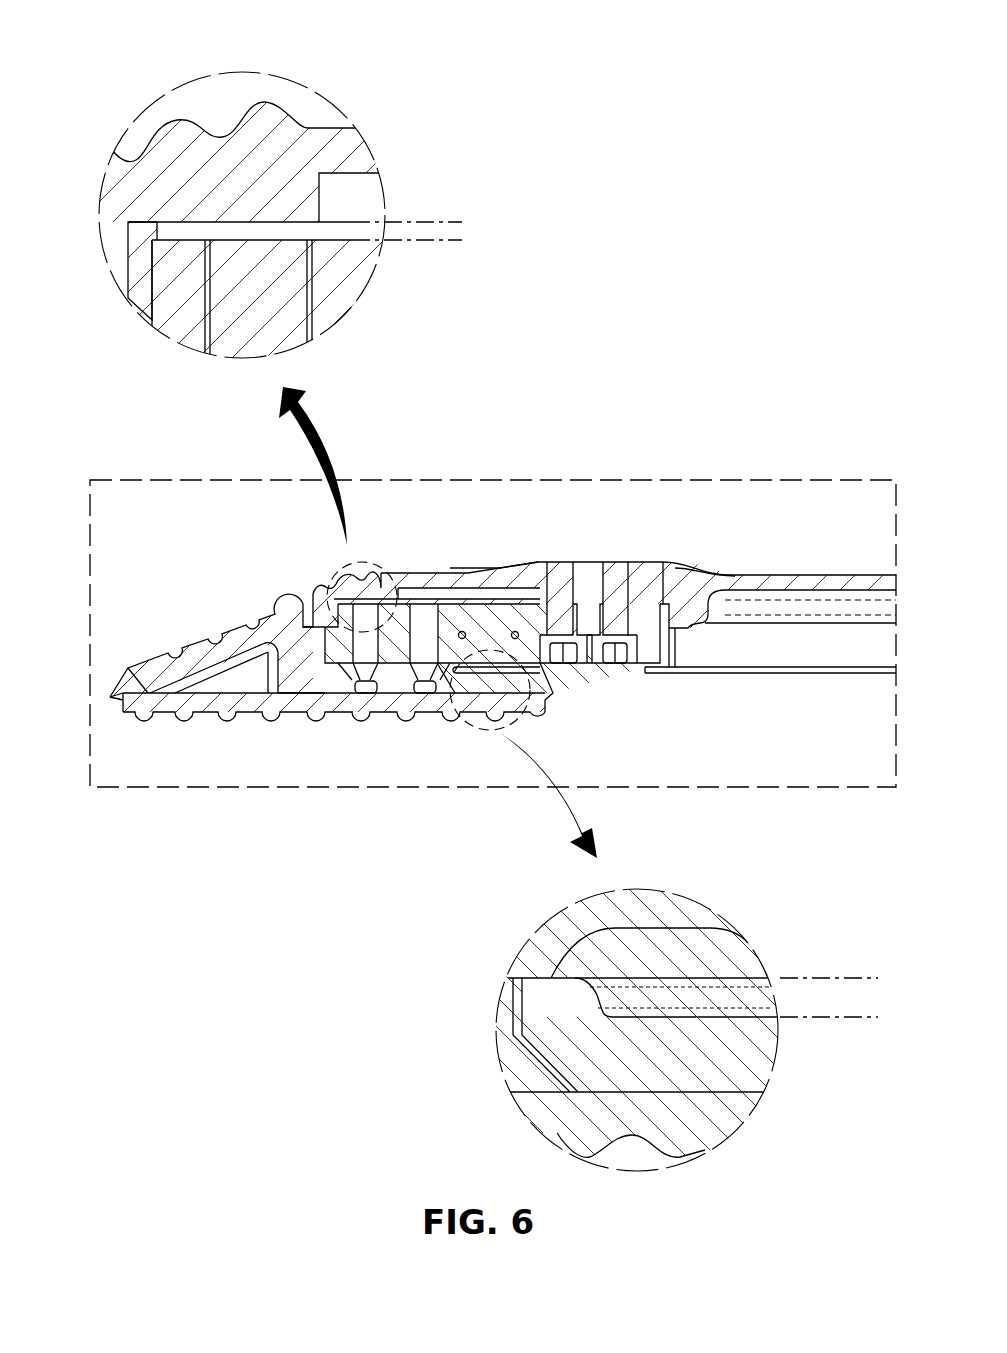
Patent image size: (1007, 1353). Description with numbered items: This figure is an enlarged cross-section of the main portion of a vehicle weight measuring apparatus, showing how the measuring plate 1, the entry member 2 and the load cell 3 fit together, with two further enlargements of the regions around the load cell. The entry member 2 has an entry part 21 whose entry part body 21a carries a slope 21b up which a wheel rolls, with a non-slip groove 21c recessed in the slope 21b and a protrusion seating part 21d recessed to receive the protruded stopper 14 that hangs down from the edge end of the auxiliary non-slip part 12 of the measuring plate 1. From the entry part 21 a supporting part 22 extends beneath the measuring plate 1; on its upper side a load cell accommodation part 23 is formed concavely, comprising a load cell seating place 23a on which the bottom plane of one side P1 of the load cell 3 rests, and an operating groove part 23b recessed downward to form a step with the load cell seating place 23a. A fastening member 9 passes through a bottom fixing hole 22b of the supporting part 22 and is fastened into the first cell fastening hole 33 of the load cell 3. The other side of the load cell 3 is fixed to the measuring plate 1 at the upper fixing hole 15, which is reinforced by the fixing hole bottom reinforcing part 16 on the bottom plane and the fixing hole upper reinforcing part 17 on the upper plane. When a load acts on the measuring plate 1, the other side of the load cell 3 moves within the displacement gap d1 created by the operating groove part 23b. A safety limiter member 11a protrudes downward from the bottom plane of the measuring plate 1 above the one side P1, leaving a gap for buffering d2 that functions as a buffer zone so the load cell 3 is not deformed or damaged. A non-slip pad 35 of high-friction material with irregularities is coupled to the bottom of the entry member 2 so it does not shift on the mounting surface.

The measuring plate 1 is at (766, 556).
The entry member 2 is at (247, 600).
The load cell 3 is at (148, 267).
The fastening member 9 is at (212, 323).
The safety limiter member 11a is at (324, 190).
The auxiliary non-slip part 12 is at (160, 112).
The protruded stopper 14 is at (310, 612).
The upper fixing hole 15 is at (600, 600).
The fixing hole bottom reinforcing part 16 is at (517, 600).
The fixing hole upper reinforcing part 17 is at (663, 600).
The entry part 21 is at (325, 880).
The entry part body 21a is at (285, 675).
The slope 21b is at (150, 652).
The non-slip groove 21c is at (176, 658).
The protrusion seating part 21d is at (303, 632).
The supporting part 22 is at (500, 687).
The bottom fixing hole 22b is at (468, 680).
The load cell accommodation part 23 is at (522, 390).
The load cell seating place 23a is at (443, 600).
The operating groove part 23b is at (483, 600).
The first cell fastening hole 33 is at (226, 246).
The non-slip pad 35 is at (557, 1133).
The one side of the load cell P1 is at (398, 605).
The displacement gap d1 is at (862, 1017).
The gap for buffering d2 is at (448, 178).